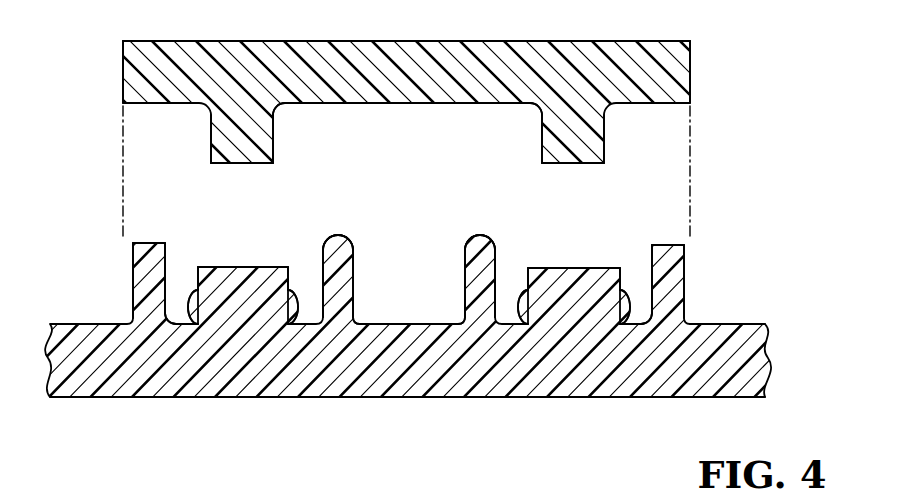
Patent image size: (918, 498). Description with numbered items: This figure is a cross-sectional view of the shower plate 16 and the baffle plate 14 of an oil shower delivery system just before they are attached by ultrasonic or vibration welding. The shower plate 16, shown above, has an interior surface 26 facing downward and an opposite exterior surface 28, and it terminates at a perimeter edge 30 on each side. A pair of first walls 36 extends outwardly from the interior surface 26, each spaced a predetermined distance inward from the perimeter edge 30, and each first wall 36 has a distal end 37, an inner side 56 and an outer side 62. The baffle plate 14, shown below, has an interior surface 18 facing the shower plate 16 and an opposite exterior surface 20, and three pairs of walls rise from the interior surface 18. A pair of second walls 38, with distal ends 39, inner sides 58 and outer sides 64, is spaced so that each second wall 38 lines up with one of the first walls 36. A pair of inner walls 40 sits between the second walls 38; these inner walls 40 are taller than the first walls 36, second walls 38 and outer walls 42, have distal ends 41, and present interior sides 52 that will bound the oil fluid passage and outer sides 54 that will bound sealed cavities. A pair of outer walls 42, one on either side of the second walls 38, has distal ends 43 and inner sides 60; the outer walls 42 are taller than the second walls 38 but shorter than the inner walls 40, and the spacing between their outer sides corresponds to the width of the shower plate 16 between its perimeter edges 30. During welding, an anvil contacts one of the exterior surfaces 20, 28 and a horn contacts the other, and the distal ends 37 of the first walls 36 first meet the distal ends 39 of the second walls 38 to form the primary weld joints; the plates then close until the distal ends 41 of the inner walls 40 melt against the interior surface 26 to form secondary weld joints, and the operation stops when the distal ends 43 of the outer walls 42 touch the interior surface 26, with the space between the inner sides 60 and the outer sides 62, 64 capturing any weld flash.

The baffle plate 14 is at (757, 350).
The shower plate 16 is at (673, 70).
The interior surface of the baffle plate 18 is at (745, 324).
The exterior surface of the baffle plate 20 is at (750, 397).
The interior surface of the shower plate 26 is at (673, 105).
The exterior surface of the shower plate 28 is at (655, 41).
The perimeter edge 30 is at (123, 78).
The first walls 36 is at (273, 135).
The distal ends of the first walls 37 is at (240, 163).
The second walls 38 is at (259, 282).
The distal ends of the second walls 39 is at (210, 267).
The inner walls 40 is at (348, 278).
The distal ends of the inner walls 41 is at (343, 240).
The outer walls 42 is at (140, 280).
The distal ends of the outer walls 43 is at (148, 243).
The interior sides of the inner walls 52 is at (355, 298).
The outer sides of the inner walls 54 is at (323, 288).
The inner sides of the first walls 56 is at (284, 112).
The inner sides of the second walls 58 is at (298, 322).
The inner sides of the outer walls 60 is at (176, 252).
The outer sides of the first walls 62 is at (211, 140).
The outer sides of the second walls 64 is at (190, 324).